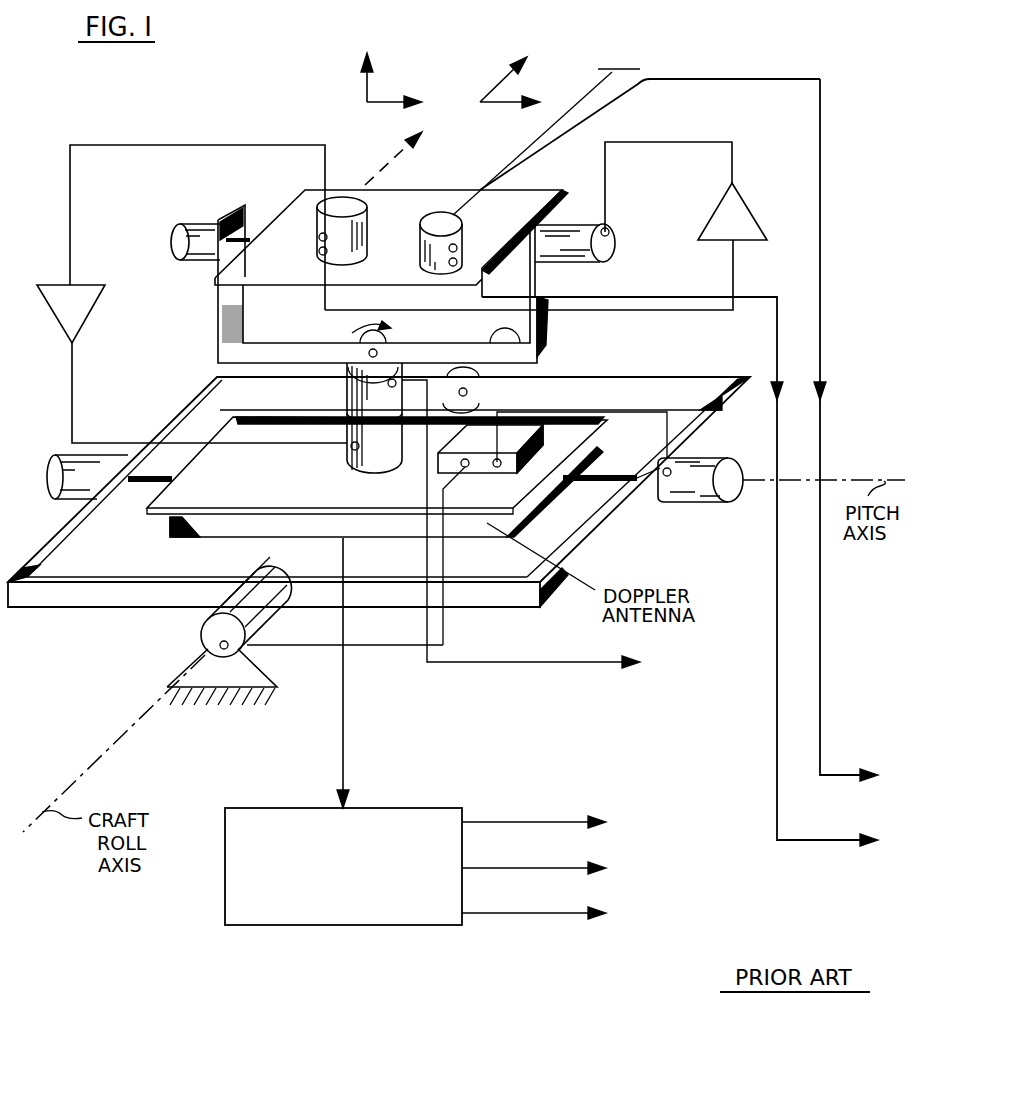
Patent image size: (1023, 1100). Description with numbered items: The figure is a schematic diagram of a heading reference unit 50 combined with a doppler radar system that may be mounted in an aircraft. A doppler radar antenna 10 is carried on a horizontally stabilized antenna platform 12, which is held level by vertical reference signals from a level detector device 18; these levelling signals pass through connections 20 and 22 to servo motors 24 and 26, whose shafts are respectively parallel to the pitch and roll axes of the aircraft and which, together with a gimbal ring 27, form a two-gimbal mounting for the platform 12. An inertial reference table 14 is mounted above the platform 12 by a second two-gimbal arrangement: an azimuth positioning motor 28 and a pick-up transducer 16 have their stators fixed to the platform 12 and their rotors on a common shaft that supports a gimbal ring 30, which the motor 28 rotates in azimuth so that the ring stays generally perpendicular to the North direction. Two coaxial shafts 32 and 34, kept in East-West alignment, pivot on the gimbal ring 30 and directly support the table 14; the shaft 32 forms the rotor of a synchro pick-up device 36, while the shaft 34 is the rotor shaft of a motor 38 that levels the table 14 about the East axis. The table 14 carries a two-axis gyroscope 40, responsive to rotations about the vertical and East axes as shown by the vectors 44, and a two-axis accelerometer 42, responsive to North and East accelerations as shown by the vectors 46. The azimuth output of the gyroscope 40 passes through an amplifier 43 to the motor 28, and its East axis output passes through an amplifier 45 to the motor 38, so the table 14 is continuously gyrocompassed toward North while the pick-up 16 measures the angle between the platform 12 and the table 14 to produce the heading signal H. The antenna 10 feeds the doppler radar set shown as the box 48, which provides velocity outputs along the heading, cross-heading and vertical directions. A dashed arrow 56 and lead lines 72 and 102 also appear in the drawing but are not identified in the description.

The doppler radar antenna 10 is at (170, 527).
The horizontally stabilized antenna platform 12 is at (244, 495).
The reference table 14 is at (296, 287).
The pick-up transducer 16 is at (344, 387).
The level detector device 18 is at (500, 470).
The connection 20 is at (613, 412).
The connection 22 is at (363, 648).
The servo motor 24 is at (695, 505).
The servo motor 26 is at (205, 627).
The gimbal ring 27 is at (752, 357).
The azimuth positioning motor 28 is at (350, 462).
The gimbal ring 30 is at (280, 337).
The shaft 32 is at (253, 240).
The shaft 34 is at (528, 243).
The synchro pick-up device 36 is at (191, 226).
The motor 38 is at (617, 232).
The gyroscope 40 is at (325, 198).
The accelerometer 42 is at (427, 211).
The amplifier 43 is at (90, 305).
The vectors 44 is at (370, 88).
The amplifier 45 is at (750, 212).
The vectors 46 is at (500, 80).
The doppler radar set 48 is at (260, 917).
The heading reference unit 50 is at (688, 69).
The heading direction arrow 56 is at (392, 167).
The heading reference output lead 72 is at (821, 222).
The platform output lead 102 is at (636, 296).